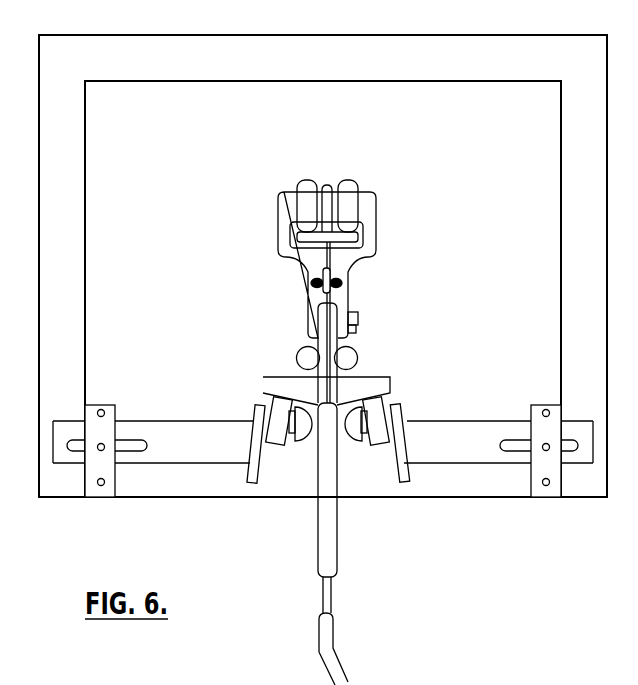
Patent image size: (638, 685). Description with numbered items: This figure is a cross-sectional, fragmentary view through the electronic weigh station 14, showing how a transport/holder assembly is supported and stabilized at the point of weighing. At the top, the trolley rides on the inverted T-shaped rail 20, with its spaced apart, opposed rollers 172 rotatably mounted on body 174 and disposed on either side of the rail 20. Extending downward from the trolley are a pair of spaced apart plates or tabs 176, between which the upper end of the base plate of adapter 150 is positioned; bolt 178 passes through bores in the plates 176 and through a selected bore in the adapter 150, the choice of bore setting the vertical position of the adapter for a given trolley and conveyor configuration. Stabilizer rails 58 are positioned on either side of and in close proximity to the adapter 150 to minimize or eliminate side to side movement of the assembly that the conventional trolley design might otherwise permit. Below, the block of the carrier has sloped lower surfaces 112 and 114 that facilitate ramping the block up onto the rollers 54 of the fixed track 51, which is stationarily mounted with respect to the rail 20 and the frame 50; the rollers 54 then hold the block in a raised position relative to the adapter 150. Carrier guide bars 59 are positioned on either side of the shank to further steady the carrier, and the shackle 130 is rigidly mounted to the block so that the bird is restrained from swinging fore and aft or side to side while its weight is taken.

The electronic weigh station 14 is at (323, 342).
The frame 50 is at (528, 40).
The inverted T-shaped rail 20 is at (327, 182).
The rollers 172 is at (304, 182).
The body 174 is at (278, 230).
The plates or tabs 176 is at (307, 320).
The bolt 178 is at (358, 325).
The adapter 150 is at (306, 368).
The stabilizer rail 58 is at (348, 358).
The lower surface of block 112 is at (385, 383).
The lower surface of block 114 is at (273, 391).
The rollers 54 is at (282, 446).
The carrier guide bars 59 is at (308, 436).
The fixed track 51 is at (251, 483).
The shackle 130 is at (368, 631).